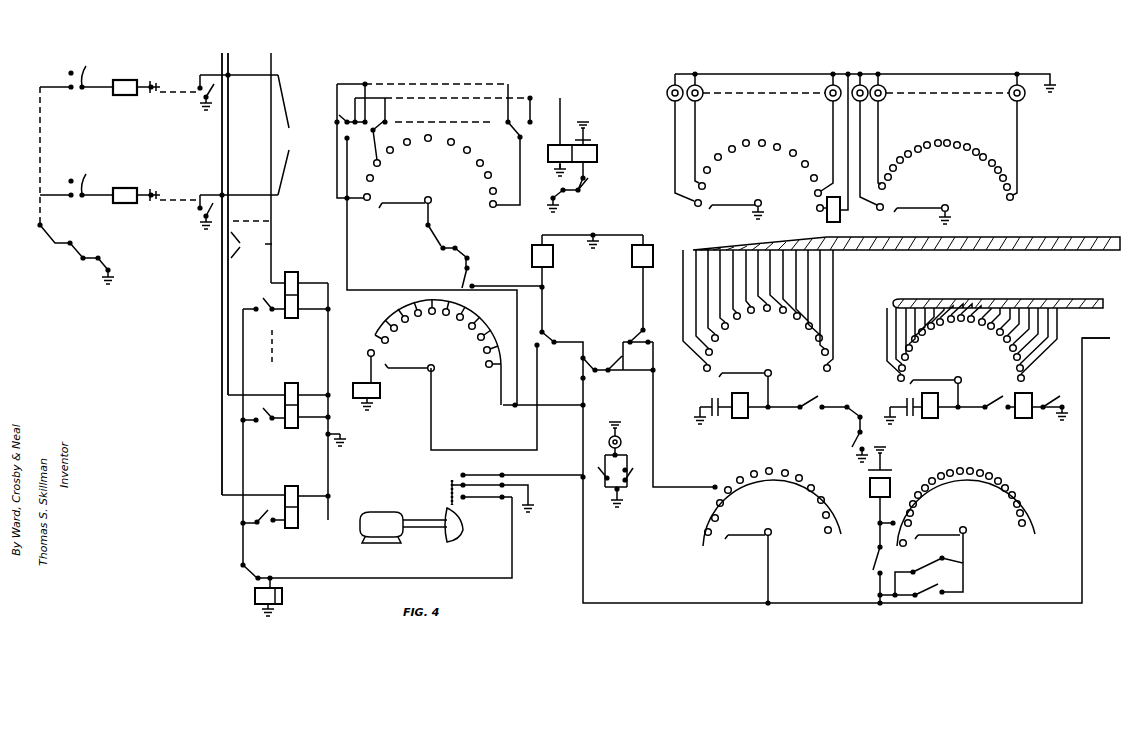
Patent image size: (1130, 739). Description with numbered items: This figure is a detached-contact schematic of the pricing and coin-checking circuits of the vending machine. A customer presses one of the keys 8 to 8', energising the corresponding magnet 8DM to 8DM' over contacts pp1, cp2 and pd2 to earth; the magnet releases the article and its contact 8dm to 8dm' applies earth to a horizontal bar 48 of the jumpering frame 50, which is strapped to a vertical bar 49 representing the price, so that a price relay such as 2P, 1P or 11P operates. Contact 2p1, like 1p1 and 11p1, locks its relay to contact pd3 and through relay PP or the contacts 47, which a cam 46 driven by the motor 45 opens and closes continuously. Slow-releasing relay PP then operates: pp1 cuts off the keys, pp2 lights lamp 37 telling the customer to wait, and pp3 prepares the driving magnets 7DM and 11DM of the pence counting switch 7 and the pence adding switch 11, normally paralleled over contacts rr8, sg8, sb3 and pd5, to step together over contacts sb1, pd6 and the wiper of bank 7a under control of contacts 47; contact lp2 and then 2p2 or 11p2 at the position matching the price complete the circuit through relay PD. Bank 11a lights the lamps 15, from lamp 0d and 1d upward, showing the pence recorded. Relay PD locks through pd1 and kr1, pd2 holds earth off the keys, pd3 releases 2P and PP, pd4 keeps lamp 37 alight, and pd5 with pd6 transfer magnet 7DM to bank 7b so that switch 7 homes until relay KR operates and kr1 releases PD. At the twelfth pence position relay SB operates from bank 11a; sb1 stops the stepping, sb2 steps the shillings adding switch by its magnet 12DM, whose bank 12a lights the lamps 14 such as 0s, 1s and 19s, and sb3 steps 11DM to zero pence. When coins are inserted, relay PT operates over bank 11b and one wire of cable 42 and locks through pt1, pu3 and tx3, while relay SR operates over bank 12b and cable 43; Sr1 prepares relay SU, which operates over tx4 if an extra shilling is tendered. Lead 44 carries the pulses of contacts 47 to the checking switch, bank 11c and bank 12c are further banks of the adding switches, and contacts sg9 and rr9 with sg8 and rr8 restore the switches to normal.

The pence counting switch 7 is at (492, 153).
The contact bank of pence counting switch 7a is at (433, 196).
The contact bank of pence counting switch 7b is at (438, 362).
The key 8 is at (76, 75).
The key 8' is at (76, 183).
The magnet 8DM is at (156, 80).
The magnet 8DM' is at (156, 188).
The contact 8dm is at (193, 92).
The contact 8dm' is at (191, 212).
The pence adding switch 11 is at (763, 130).
The contact bank of pence adding switch 11a is at (785, 205).
The contact bank of pence adding switch 11b is at (797, 375).
The contact bank of pence adding switch 11c is at (796, 531).
The price relay 11P is at (298, 278).
The contact of relay 11P 11p1 is at (267, 302).
The contact of relay 11P 11p2 is at (528, 144).
The driving magnet of pence adding switch 11DM is at (660, 282).
The contact bank of shillings adding switch 12a is at (973, 208).
The contact bank of shillings adding switch 12b is at (988, 381).
The contact bank of shillings adding switch 12c is at (991, 530).
The driving magnet of shillings adding switch 12DM is at (870, 489).
The lamps 14 is at (947, 64).
The lamps 15 is at (767, 64).
The nineteen-shilling lamp 19s is at (1023, 137).
The zero-pence lamp 0d is at (676, 140).
The one-penny lamp 1d is at (691, 131).
The zero-shilling lamp 0s is at (867, 142).
The one-shilling lamp 1s is at (883, 131).
The price relay 1P is at (298, 490).
The contact of relay 1P 1p1 is at (269, 524).
The price relay 2P is at (298, 388).
The contact of relay 2P 2p1 is at (267, 413).
The contact of relay 2P 2p2 is at (391, 138).
The lamp 37 is at (621, 442).
The cable 42 is at (1085, 241).
The cable 43 is at (1085, 299).
The lead 44 is at (1085, 337).
The motor 45 is at (390, 514).
The cam 46 is at (452, 528).
The contacts 47 is at (462, 478).
The horizontal bar 48 is at (282, 168).
The vertical bar 49 is at (251, 239).
The jumpering frame 50 is at (258, 148).
The contact of relay PP pp1 is at (54, 233).
The contact of relay CP cp2 is at (85, 250).
The contact of relay PD pd2 is at (118, 271).
The contact of relay PD pd3 is at (362, 540).
The slow-release relay PP is at (282, 598).
The relay KR is at (376, 380).
The contact of relay 1P lp2 is at (337, 122).
The relay PD is at (597, 153).
The contact of relay KR kr1 is at (583, 186).
The contact of relay PD pd1 is at (546, 201).
The contact of relay PD pd6 is at (432, 242).
The contact of relay SB sb1 is at (472, 253).
The contact of relay PP pp3 is at (456, 278).
The driving magnet of pence counting switch 7DM is at (587, 282).
The contact of relay PD pd5 is at (561, 339).
The contact of relay SB sb3 is at (616, 364).
The contact of relay SG sg8 is at (632, 364).
The contact of relay RR rr8 is at (647, 332).
The contact of relay PD pd4 is at (596, 471).
The contact of relay PP pp2 is at (636, 475).
The relay SB is at (840, 221).
The relay PT is at (747, 411).
The contact of relay PT pt1 is at (817, 398).
The contact of relay PU pu3 is at (864, 412).
The contact of relay TX tx3 is at (868, 445).
The relay SR is at (934, 414).
The contact of relay SR Sr1 is at (998, 413).
The relay SU is at (1038, 414).
The contact of relay TX tx4 is at (1054, 401).
The contact of relay SB sb2 is at (889, 573).
The contact of relay SG sg9 is at (921, 568).
The contact of relay RR rr9 is at (939, 585).